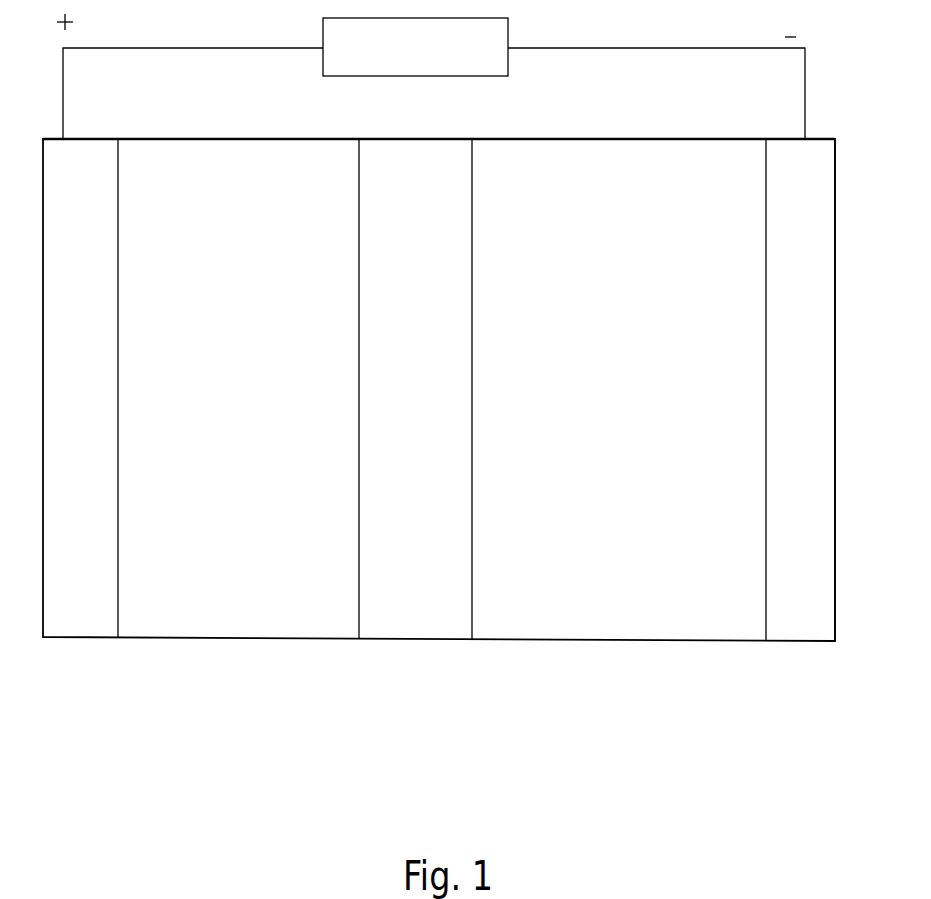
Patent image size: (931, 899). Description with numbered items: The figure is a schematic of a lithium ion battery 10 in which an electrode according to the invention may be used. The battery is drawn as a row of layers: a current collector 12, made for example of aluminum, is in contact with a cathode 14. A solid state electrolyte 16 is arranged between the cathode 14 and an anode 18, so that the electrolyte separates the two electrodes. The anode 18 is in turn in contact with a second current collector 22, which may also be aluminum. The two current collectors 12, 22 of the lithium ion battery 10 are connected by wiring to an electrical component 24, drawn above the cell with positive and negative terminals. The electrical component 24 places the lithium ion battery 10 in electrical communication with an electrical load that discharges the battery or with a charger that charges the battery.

The lithium ion battery 10 is at (185, 673).
The current collector 12 is at (80, 603).
The cathode 14 is at (243, 608).
The solid state electrolyte 16 is at (428, 603).
The anode 18 is at (612, 613).
The current collector 22 is at (803, 610).
The electrical component 24 is at (480, 53).